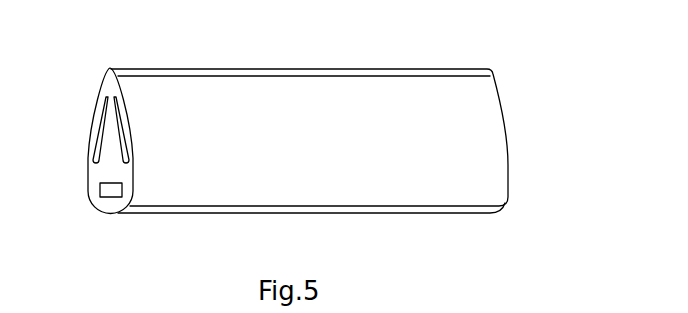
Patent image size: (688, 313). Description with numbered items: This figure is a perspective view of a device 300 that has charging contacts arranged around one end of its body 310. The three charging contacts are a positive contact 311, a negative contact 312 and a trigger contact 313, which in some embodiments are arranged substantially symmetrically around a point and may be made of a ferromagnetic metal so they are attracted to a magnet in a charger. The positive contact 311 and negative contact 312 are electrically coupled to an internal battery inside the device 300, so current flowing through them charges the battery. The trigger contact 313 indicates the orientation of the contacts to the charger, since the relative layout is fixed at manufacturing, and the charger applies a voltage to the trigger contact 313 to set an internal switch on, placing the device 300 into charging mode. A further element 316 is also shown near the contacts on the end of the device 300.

The device 300 is at (424, 48).
The elongated body 310 is at (335, 174).
The positive contact 311 is at (104, 191).
The negative contact 312 is at (102, 140).
The trigger contact 313 is at (125, 140).
The sensor / contact element 316 is at (110, 162).